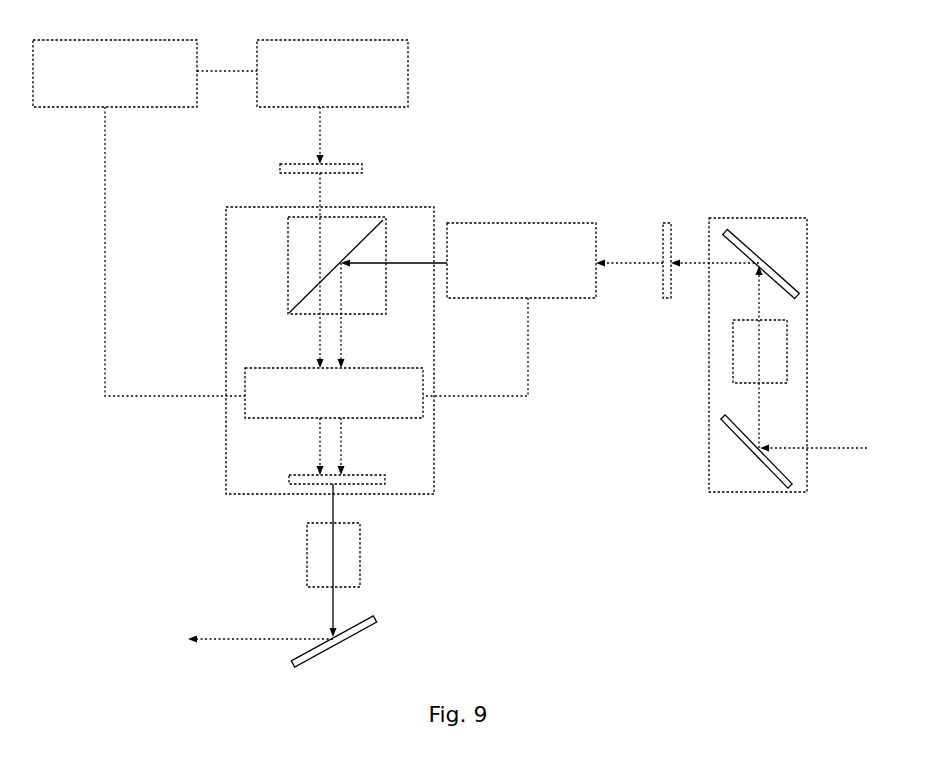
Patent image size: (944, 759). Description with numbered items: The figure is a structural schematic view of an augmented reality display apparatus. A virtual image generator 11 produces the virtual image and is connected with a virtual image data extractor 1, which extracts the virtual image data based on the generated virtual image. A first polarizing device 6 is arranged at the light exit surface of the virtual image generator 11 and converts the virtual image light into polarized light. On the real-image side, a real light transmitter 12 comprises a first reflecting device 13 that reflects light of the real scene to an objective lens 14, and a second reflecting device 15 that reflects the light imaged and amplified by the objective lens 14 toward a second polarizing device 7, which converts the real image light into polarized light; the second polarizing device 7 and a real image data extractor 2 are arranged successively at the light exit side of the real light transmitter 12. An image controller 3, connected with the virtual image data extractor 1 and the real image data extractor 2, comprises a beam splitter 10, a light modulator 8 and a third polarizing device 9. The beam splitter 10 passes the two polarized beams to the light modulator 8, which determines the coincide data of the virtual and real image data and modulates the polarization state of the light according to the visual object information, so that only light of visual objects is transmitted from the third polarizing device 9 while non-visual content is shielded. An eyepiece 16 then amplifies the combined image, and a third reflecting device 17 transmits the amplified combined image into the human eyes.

The virtual image data extractor 1 is at (113, 40).
The virtual image generator 11 is at (317, 40).
The first polarizing device 6 is at (280, 167).
The image controller 3 is at (226, 424).
The beam splitter 10 is at (288, 270).
The light modulator 8 is at (245, 383).
The third polarizing device 9 is at (289, 480).
The real image data extractor 2 is at (516, 222).
The second polarizing device 7 is at (667, 222).
The real light transmitter 12 is at (709, 478).
The second reflecting device 15 is at (733, 232).
The objective lens 14 is at (733, 356).
The first reflecting device 13 is at (723, 418).
The eyepiece 16 is at (307, 557).
The third reflecting device 17 is at (293, 667).